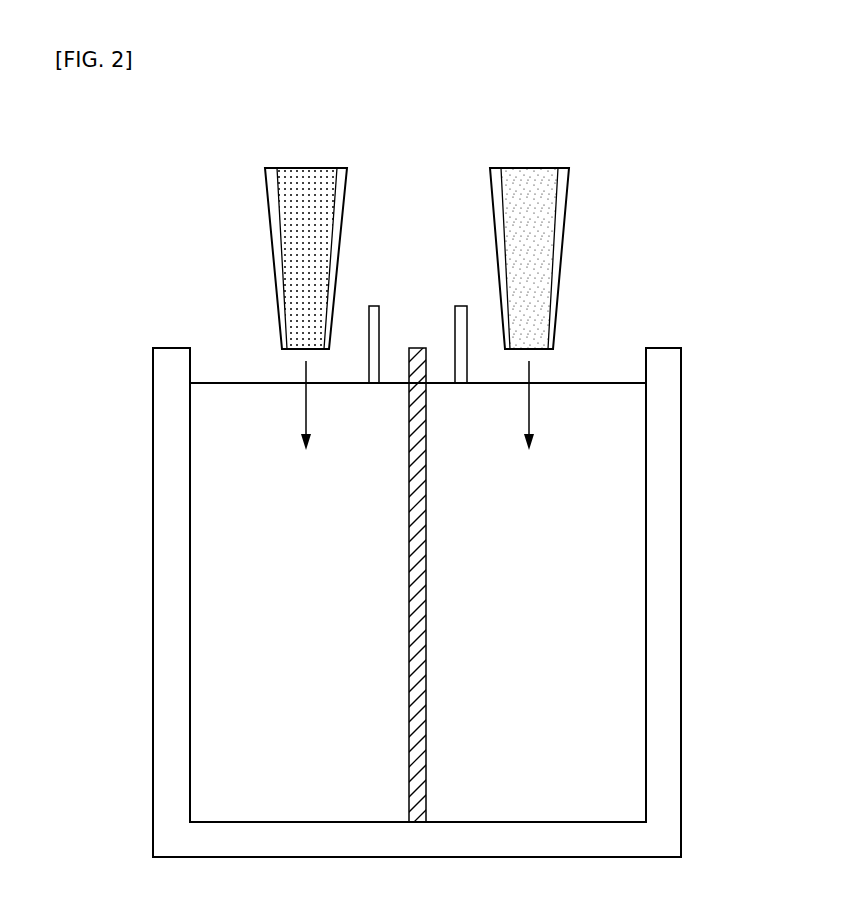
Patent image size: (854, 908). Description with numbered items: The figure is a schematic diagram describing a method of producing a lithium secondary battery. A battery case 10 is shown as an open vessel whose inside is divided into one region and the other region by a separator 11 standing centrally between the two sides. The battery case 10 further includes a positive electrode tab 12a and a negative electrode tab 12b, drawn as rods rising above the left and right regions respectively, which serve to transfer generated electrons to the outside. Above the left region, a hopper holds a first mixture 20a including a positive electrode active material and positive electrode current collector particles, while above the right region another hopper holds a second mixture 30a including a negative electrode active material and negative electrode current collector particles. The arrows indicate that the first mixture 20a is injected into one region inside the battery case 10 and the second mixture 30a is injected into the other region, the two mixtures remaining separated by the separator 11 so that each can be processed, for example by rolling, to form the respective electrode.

The battery case 10 is at (668, 565).
The separator 11 is at (417, 358).
The positive electrode tab 12a is at (374, 305).
The negative electrode tab 12b is at (461, 305).
The first mixture 20a is at (307, 180).
The second mixture 30a is at (530, 180).